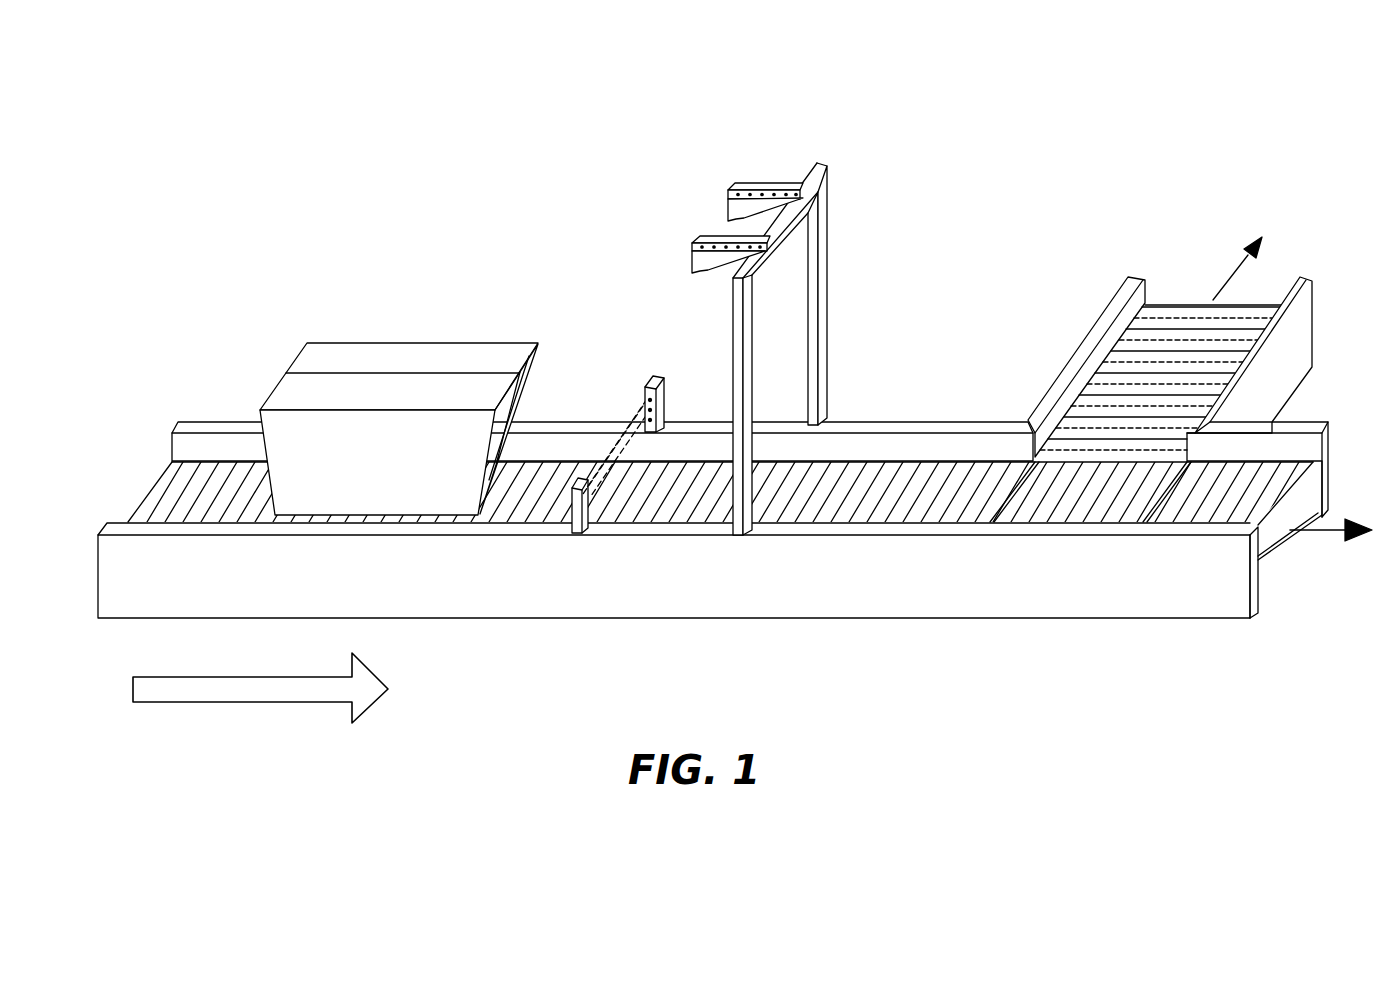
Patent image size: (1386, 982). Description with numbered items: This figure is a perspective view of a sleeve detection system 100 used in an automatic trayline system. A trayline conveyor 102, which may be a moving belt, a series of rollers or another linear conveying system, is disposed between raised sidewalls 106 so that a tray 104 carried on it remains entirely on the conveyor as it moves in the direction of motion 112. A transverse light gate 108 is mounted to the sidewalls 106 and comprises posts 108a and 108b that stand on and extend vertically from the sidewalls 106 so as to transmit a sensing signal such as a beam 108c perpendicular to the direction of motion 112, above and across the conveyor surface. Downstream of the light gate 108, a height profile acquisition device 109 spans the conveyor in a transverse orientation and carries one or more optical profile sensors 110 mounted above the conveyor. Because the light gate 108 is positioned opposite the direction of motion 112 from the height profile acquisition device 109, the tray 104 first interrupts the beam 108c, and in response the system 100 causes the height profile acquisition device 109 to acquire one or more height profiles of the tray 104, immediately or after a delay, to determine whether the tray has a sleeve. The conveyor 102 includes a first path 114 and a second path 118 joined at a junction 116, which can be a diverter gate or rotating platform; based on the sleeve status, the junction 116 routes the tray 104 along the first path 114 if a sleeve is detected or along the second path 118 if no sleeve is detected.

The sleeve detection system 100 is at (735, 433).
The trayline conveyor 102 is at (160, 497).
The tray 104 is at (330, 355).
The raised sidewalls 106 is at (942, 447).
The transverse light gate 108 is at (610, 486).
The post 108a is at (578, 538).
The post 108b is at (658, 375).
The beam 108c is at (643, 412).
The height profile acquisition device 109 is at (848, 233).
The optical profile sensors 110 is at (693, 259).
The direction of motion 112 is at (243, 704).
The first path 114 is at (1312, 535).
The junction 116 is at (1062, 512).
The second path 118 is at (1222, 272).